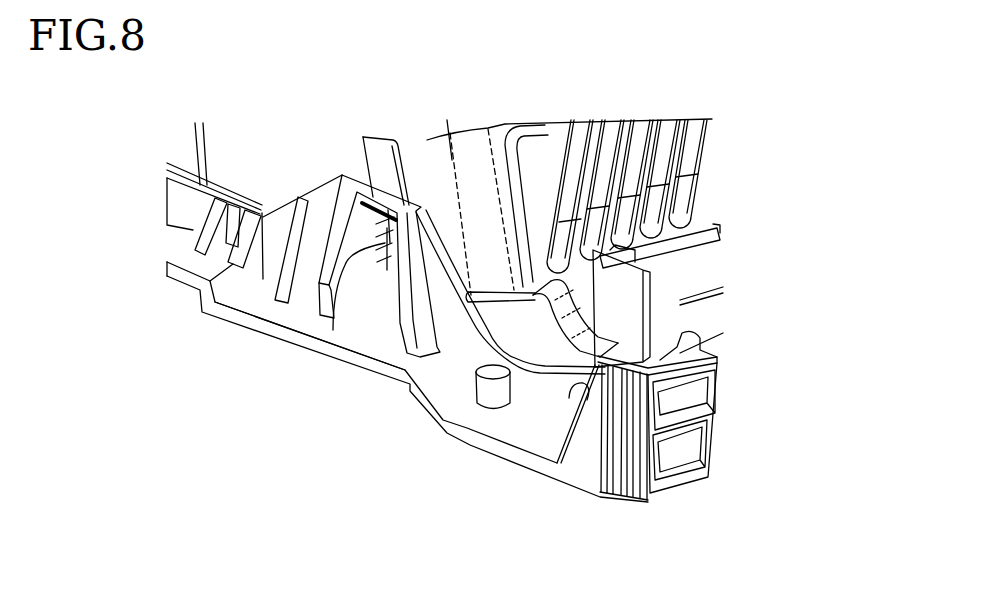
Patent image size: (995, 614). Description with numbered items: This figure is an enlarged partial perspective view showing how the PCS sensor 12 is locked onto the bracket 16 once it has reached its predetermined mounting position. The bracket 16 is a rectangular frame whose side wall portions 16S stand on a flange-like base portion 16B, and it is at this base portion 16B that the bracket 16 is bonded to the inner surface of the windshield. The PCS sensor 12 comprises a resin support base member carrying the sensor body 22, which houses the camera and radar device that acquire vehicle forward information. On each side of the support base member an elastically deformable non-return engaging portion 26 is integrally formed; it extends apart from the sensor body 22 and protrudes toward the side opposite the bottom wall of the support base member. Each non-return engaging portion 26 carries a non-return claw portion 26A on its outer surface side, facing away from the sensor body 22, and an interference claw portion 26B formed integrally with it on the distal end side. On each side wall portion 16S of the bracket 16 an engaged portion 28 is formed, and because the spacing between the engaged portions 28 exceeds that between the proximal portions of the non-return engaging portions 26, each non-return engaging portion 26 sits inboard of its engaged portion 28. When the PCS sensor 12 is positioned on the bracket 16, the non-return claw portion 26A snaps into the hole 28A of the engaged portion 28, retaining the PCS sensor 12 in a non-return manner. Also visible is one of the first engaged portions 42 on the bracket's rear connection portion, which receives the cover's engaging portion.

The PCS sensor 12 is at (611, 108).
The bracket 16 is at (523, 480).
The side wall portion 16S is at (183, 210).
The base portion 16B is at (266, 307).
The sensor body 22 is at (667, 167).
The non-return engaging portion 26 is at (362, 150).
The non-return claw portion 26A is at (390, 243).
The interference claw portion 26B is at (408, 185).
The engaged portion 28 is at (336, 200).
The hole 28A is at (335, 323).
The first engaged portion 42 is at (722, 396).